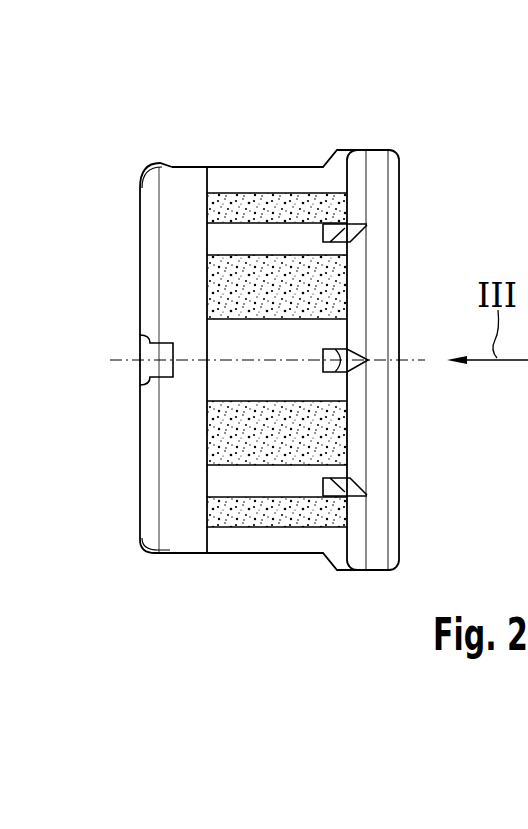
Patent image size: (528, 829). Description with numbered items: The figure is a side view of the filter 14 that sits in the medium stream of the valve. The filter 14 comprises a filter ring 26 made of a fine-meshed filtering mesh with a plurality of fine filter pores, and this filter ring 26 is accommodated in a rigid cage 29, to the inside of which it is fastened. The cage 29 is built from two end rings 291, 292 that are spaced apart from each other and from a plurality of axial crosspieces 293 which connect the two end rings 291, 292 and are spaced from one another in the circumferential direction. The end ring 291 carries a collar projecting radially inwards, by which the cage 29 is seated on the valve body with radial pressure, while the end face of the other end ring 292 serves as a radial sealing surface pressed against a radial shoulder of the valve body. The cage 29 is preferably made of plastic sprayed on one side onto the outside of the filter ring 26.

The filter 14 is at (224, 76).
The end ring 291 is at (180, 183).
The cage 29 is at (269, 166).
The end ring 292 is at (376, 165).
The axial crosspieces 293 is at (255, 240).
The filter ring 26 is at (225, 297).